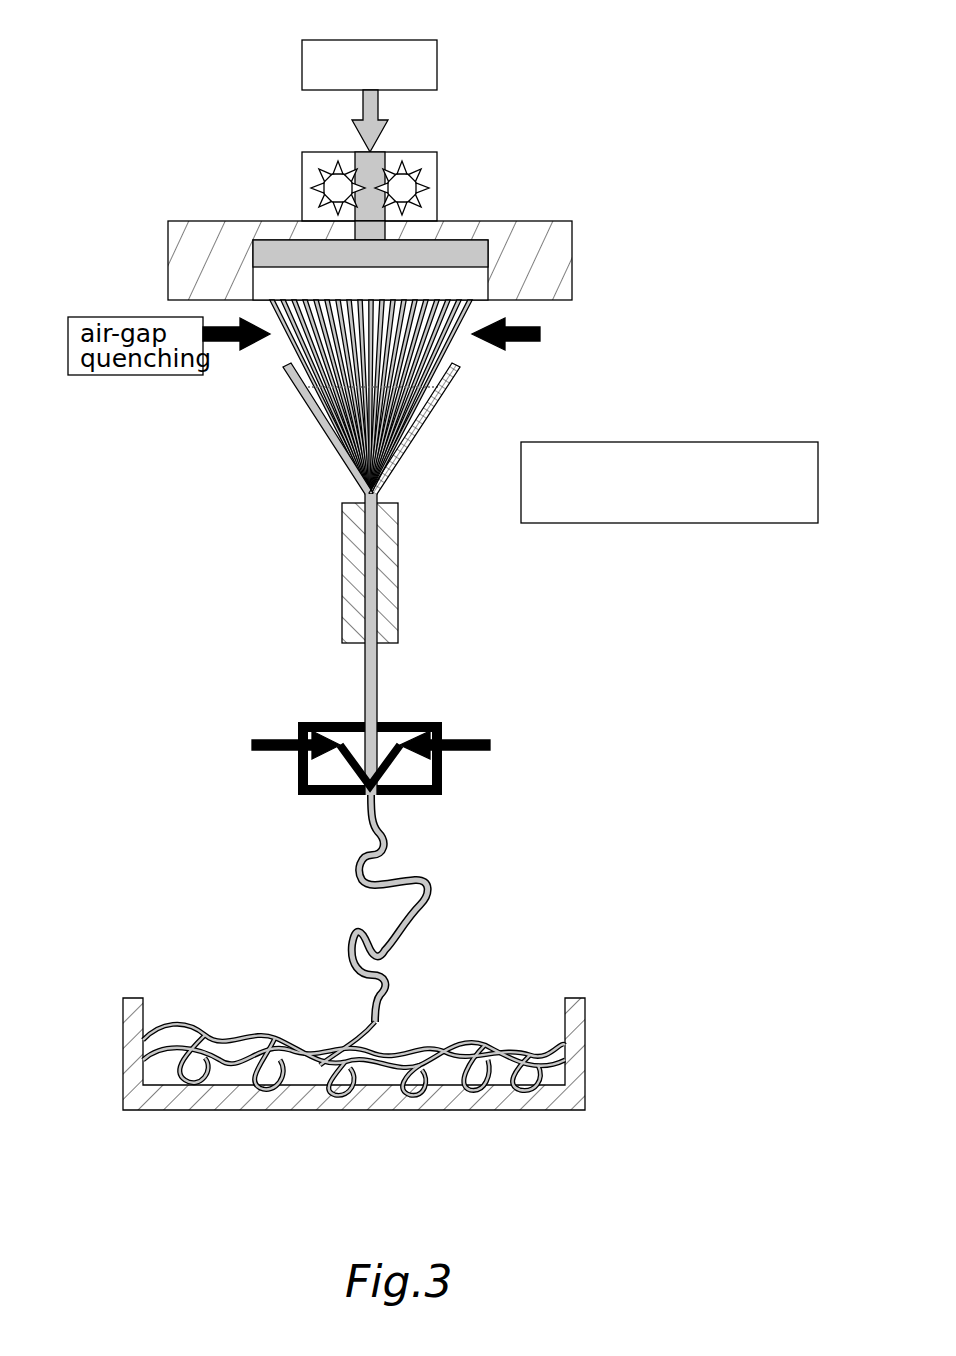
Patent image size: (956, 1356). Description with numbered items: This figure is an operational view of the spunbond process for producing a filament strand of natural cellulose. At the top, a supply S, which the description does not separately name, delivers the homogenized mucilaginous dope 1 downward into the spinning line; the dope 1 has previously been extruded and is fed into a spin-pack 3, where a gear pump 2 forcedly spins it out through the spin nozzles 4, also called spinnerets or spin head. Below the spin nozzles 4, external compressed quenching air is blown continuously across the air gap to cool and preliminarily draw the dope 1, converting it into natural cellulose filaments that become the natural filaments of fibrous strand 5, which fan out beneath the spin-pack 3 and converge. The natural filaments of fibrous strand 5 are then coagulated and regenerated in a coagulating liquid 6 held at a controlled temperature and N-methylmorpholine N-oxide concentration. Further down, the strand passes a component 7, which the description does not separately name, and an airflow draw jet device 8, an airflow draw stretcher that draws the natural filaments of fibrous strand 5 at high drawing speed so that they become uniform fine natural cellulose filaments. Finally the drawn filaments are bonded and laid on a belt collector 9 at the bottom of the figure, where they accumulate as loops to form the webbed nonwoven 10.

The source / supply S is at (371, 56).
The dope 1 is at (356, 112).
The gear pump 2 is at (405, 186).
The spin-pack 3 is at (186, 240).
The spin nozzles 4 is at (480, 287).
The natural filaments of fibrous strand 5 is at (400, 430).
The coagulating liquid 6 is at (305, 424).
The crimping box / draw unit 7 is at (438, 745).
The airflow draw jet device 8 is at (415, 776).
The belt collector 9 is at (578, 1058).
The webbed nonwoven 10 is at (375, 1075).